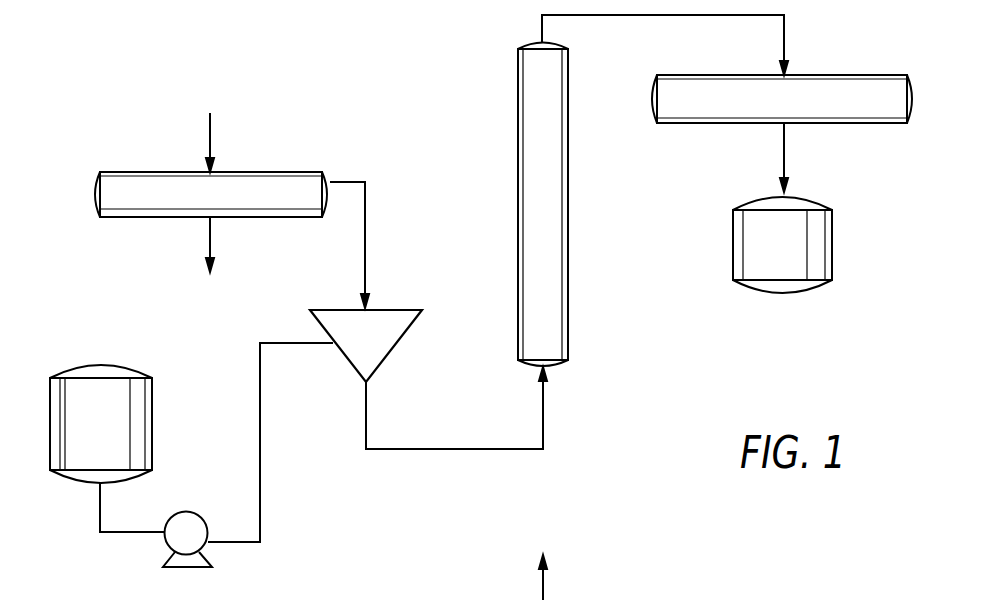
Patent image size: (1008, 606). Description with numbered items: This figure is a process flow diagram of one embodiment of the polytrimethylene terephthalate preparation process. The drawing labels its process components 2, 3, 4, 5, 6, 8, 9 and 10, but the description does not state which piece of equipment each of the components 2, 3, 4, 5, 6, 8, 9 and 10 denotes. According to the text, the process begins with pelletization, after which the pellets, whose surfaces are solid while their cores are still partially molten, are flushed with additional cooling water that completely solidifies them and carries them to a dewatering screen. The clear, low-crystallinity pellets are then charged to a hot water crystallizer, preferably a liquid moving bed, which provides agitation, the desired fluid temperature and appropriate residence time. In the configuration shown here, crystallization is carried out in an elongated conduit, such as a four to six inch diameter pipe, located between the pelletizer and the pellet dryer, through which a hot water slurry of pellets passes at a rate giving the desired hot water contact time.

The heat exchanger / reactor tube 2 is at (285, 188).
The outlet line 3 is at (262, 218).
The feed line 4 is at (367, 228).
The mixing device 5 is at (403, 340).
The supply line 6 is at (293, 343).
The column 8 is at (570, 265).
The condenser 9 is at (868, 75).
The collection vessel 10 is at (835, 252).